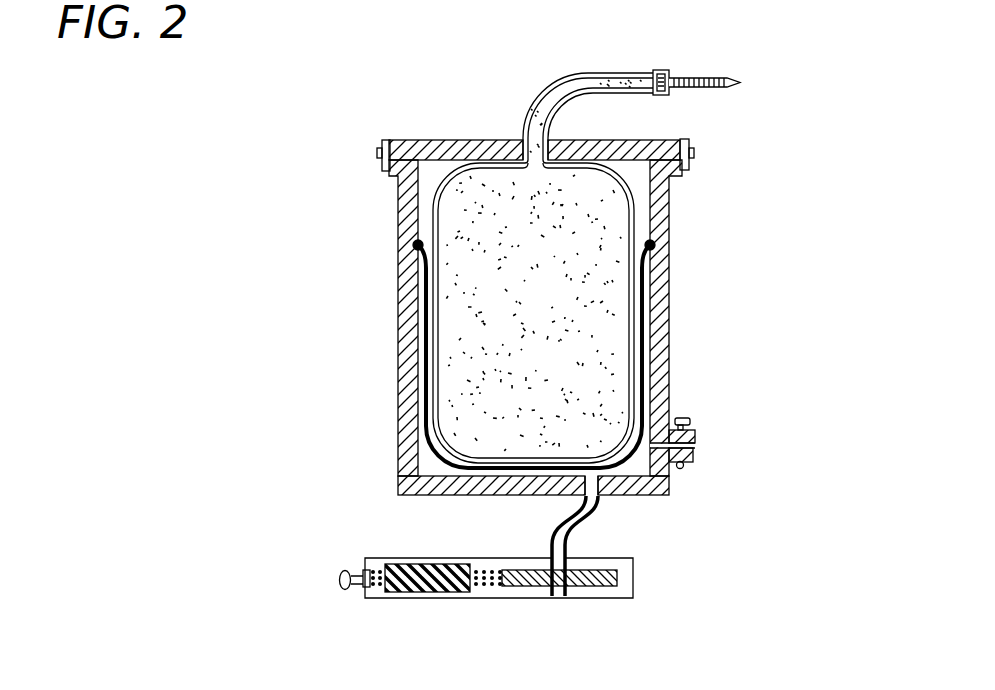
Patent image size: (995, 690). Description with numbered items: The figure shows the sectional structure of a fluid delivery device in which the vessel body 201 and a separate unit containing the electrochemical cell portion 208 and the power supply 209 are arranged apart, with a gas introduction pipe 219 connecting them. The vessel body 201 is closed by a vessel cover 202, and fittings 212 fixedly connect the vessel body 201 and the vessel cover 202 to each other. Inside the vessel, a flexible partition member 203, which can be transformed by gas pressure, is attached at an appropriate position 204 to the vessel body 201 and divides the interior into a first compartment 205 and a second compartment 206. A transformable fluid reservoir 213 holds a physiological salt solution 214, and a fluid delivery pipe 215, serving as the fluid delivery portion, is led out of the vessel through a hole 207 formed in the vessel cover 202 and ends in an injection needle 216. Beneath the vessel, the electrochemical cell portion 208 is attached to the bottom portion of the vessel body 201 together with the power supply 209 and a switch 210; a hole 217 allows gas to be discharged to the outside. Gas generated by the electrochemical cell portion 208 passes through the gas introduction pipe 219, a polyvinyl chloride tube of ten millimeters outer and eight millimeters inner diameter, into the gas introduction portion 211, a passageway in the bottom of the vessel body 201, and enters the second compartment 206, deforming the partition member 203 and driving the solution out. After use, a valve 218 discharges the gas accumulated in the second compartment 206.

The vessel body 201 is at (408, 425).
The vessel cover 202 is at (455, 150).
The partition member 203 is at (428, 350).
The attachment position 204 is at (416, 246).
The first compartment 205 is at (436, 204).
The second compartment 206 is at (428, 462).
The hole 207 is at (522, 148).
The electrochemical cell portion 208 is at (590, 582).
The power supply 209 is at (422, 588).
The switch 210 is at (339, 580).
The gas introduction portion 211 is at (600, 484).
The fittings 212 is at (380, 150).
The transformable fluid reservoir 213 is at (641, 313).
The physiological salt solution 214 is at (615, 215).
The fluid delivery pipe 215 is at (593, 80).
The injection needle 216 is at (702, 78).
The gas discharge hole 217 is at (556, 595).
The valve 218 is at (694, 420).
The gas introduction pipe 219 is at (572, 553).